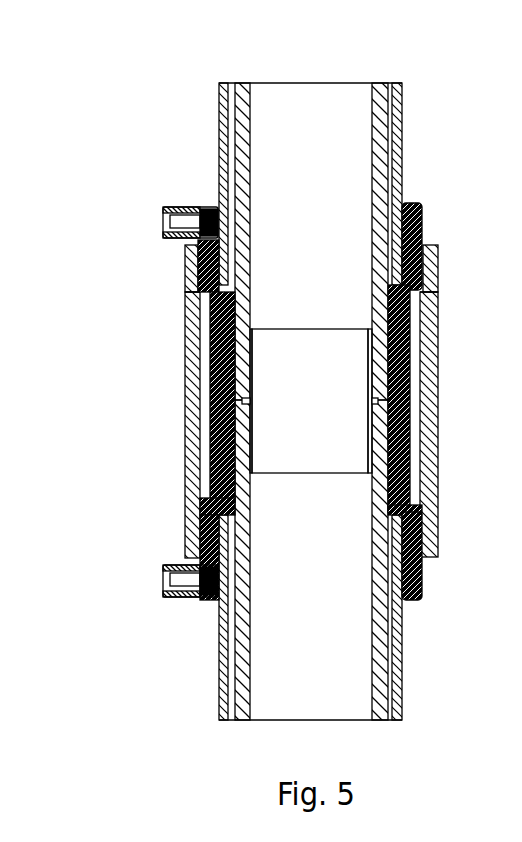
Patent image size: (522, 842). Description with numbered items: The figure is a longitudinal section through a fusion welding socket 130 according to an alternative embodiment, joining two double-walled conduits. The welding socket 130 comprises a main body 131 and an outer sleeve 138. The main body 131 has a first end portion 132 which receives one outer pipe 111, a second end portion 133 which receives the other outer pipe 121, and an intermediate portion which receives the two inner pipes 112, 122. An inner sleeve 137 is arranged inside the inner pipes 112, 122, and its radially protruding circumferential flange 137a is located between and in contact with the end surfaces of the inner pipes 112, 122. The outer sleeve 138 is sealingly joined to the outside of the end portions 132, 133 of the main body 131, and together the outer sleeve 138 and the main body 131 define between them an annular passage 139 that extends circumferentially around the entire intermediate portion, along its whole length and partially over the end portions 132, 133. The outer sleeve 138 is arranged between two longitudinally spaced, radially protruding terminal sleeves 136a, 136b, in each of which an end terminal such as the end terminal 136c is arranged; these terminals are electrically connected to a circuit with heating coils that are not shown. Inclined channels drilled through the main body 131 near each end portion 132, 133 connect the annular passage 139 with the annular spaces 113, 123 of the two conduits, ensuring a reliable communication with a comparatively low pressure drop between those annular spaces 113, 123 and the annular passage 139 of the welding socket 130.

The outer pipe 111 is at (220, 650).
The inner pipe 112 is at (273, 533).
The annular space 113 is at (232, 720).
The outer pipe 121 is at (219, 140).
The inner pipe 122 is at (250, 268).
The annular space 123 is at (232, 83).
The welding socket 130 is at (183, 367).
The main body 131 is at (202, 498).
The first end portion 132 is at (197, 537).
The second end portion 133 is at (186, 256).
The terminal sleeve 136a is at (170, 207).
The terminal sleeve 136b is at (172, 597).
The end terminal 136c is at (183, 222).
The inner sleeve 137 is at (368, 362).
The circumferential flange 137a is at (372, 400).
The outer sleeve 138 is at (187, 287).
The annular passage 139 is at (208, 417).